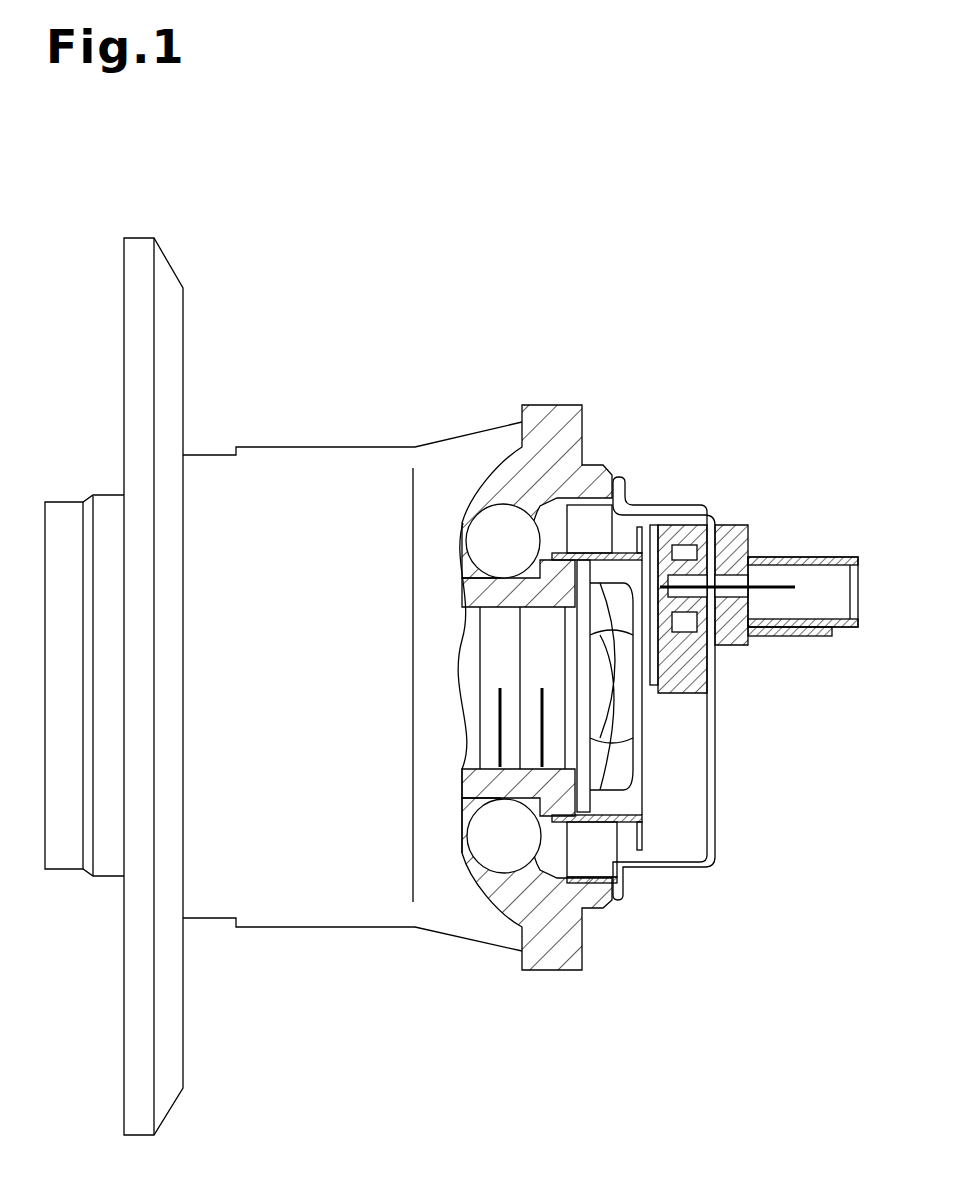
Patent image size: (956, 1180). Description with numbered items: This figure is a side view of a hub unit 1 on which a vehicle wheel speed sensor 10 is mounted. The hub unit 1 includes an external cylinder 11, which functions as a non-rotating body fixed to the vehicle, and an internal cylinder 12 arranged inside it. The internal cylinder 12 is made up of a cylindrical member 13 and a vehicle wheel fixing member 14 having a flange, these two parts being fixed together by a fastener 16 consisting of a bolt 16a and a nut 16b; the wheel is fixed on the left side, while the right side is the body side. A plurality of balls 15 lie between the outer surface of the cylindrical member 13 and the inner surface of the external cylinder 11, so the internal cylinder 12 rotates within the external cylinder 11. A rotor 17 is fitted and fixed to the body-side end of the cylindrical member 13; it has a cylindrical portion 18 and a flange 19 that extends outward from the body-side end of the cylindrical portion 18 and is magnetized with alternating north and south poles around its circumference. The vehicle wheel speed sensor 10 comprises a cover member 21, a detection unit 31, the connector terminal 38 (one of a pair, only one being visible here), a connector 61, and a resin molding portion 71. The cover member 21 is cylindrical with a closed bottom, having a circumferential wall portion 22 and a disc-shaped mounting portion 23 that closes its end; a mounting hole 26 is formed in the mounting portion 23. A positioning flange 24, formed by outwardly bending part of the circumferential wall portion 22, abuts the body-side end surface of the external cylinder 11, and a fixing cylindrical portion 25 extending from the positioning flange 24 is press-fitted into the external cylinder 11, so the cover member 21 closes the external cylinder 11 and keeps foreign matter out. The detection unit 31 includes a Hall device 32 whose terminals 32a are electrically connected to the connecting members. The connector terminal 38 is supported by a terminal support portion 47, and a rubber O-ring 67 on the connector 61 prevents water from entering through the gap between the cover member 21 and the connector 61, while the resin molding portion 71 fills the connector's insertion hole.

The hub unit 1 is at (343, 440).
The vehicle wheel speed sensor 10 is at (722, 782).
The external cylinder 11 is at (272, 447).
The internal cylinder 12 is at (495, 592).
The cylindrical member 13 is at (466, 573).
The vehicle wheel fixing member 14 is at (185, 313).
The balls 15 is at (486, 522).
The retainer plate 16 is at (583, 686).
The bolt 16a is at (505, 798).
The nut 16b is at (630, 782).
The rotor 17 is at (645, 812).
The cylindrical portion 18 is at (597, 822).
The flange 19 is at (648, 842).
The cover member 21 is at (718, 742).
The circumferential wall portion 22 is at (700, 868).
The mounting portion 23 is at (718, 833).
The positioning flange 24 is at (628, 478).
The fixing cylindrical portion 25 is at (590, 490).
The mounting hole 26 is at (730, 525).
The detection unit 31 is at (690, 525).
The Hall device 32 is at (655, 525).
The terminals 32a is at (637, 540).
The connector terminal 38 is at (778, 562).
The terminal support portion 47 is at (755, 622).
The connector 61 is at (808, 637).
The O-ring 67 is at (722, 650).
The resin molding portion 71 is at (680, 694).